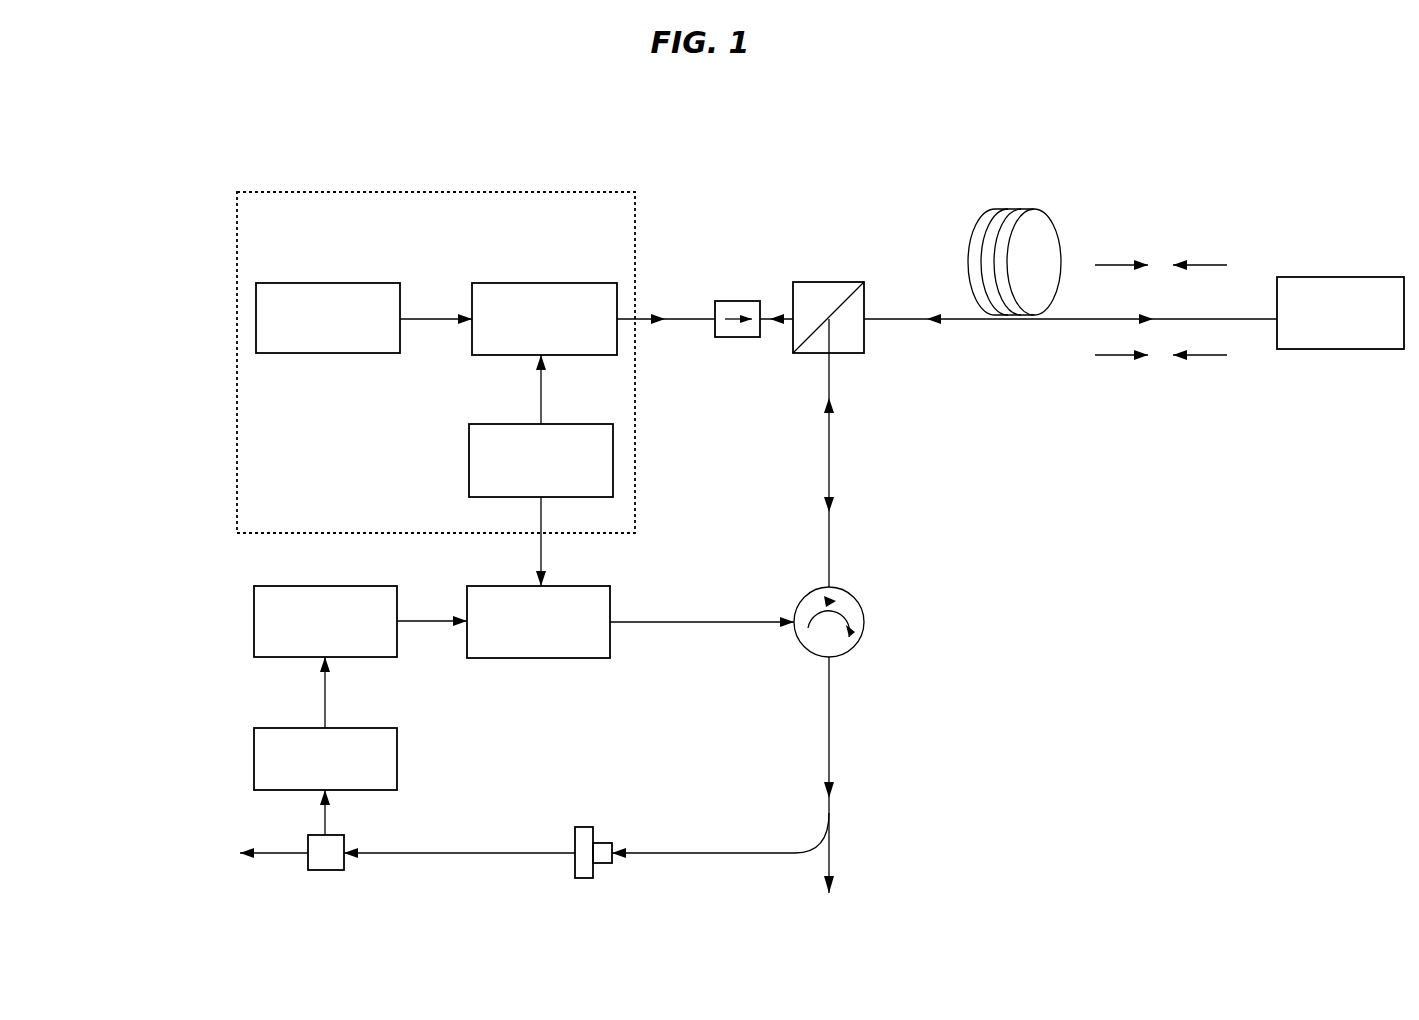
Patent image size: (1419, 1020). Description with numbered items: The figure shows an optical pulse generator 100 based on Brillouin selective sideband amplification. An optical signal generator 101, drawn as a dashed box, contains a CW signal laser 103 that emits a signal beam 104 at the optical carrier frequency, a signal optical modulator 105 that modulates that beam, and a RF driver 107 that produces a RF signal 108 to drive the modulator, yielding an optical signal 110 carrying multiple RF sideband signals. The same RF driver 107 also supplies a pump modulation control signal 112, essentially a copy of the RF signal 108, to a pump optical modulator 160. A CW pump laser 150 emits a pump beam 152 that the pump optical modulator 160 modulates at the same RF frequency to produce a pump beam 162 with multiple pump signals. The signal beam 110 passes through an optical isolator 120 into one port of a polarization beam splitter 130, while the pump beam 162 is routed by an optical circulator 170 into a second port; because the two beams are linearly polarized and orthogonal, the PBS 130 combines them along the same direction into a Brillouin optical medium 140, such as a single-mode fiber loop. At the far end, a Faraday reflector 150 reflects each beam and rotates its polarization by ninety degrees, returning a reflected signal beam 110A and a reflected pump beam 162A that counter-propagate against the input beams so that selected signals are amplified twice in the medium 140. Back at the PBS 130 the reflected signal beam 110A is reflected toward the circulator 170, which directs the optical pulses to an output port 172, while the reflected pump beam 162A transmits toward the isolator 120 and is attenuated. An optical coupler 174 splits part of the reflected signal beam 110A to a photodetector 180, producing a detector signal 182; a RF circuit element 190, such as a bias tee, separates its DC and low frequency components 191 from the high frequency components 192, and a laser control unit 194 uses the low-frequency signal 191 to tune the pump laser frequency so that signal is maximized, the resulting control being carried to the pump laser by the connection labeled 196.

The optical pulse generator 100 is at (1078, 593).
The optical signal generator 101 is at (457, 192).
The CW signal laser 103 is at (327, 283).
The signal beam 104 is at (430, 320).
The signal optical modulator 105 is at (472, 283).
The RF driver 107 is at (469, 452).
The RF signal 108 is at (541, 388).
The optical signal 110 is at (1115, 265).
The reflected signal beam 110A is at (1218, 355).
The pump modulation control signal 112 is at (541, 545).
The optical isolator 120 is at (735, 301).
The polarization beam splitter 130 is at (840, 282).
The Brillouin optical medium 140 is at (1010, 208).
The Faraday reflector 150 is at (1340, 349).
The pump beam 152 is at (422, 625).
The pump optical modulator 160 is at (540, 658).
The pump beam 162 is at (1118, 355).
The reflected pump beam 162A is at (1210, 265).
The optical circulator 170 is at (866, 622).
The output port 172 is at (831, 860).
The optical coupler 174 is at (831, 815).
The photodetector 180 is at (585, 870).
The detector signal 182 is at (460, 855).
The RF circuit element 190 is at (326, 870).
The DC and low frequency components 191 is at (327, 825).
The high frequency components 192 is at (272, 855).
The laser control unit 194 is at (254, 755).
The laser control signal 196 is at (322, 690).